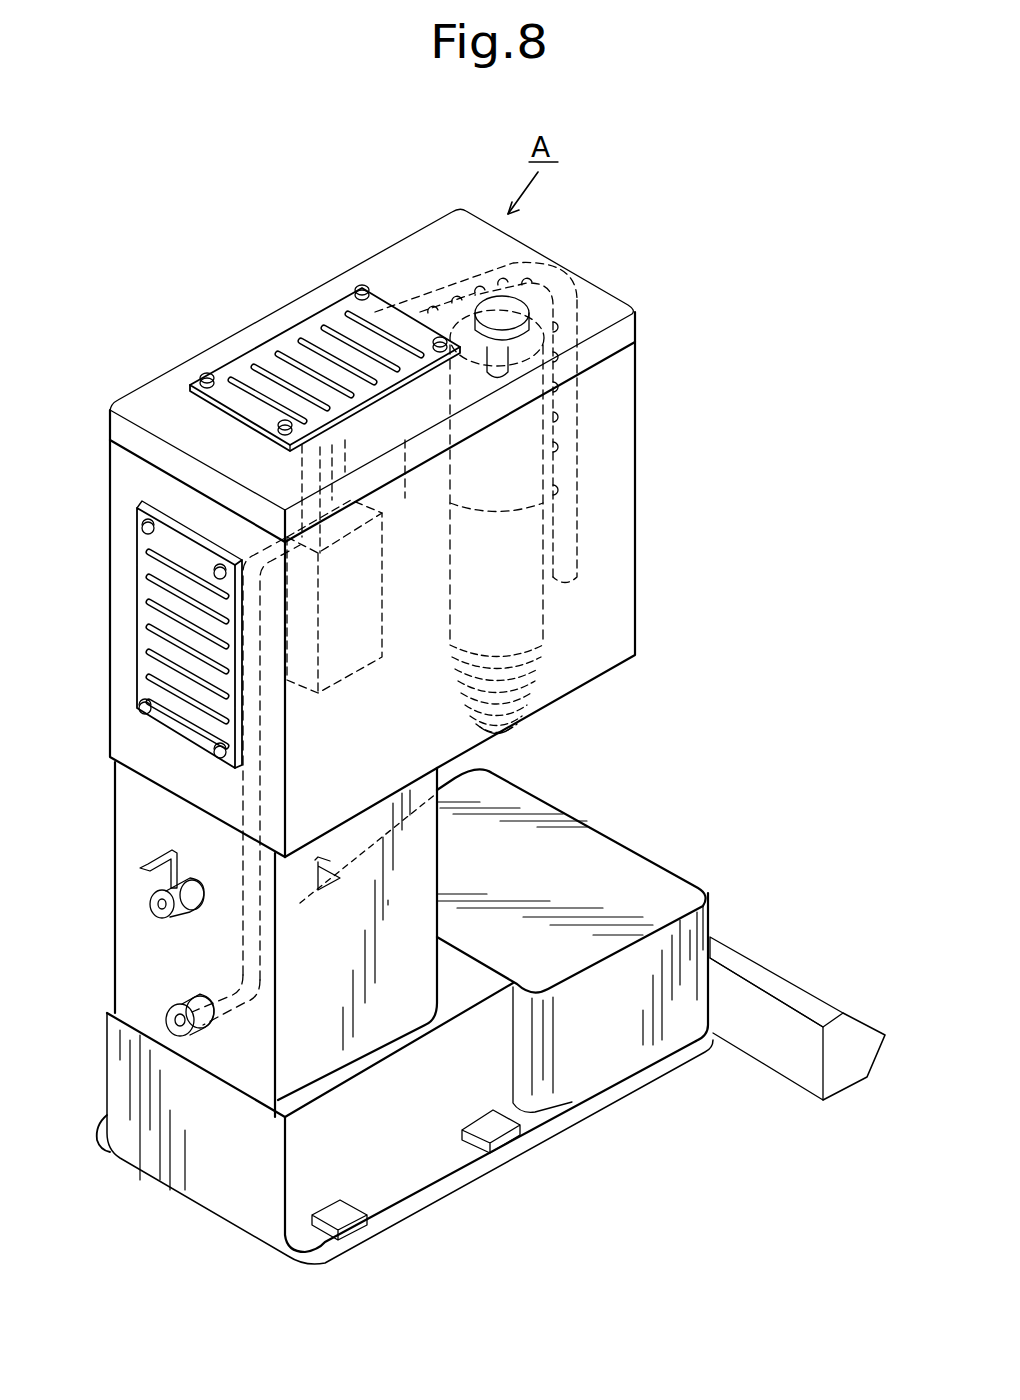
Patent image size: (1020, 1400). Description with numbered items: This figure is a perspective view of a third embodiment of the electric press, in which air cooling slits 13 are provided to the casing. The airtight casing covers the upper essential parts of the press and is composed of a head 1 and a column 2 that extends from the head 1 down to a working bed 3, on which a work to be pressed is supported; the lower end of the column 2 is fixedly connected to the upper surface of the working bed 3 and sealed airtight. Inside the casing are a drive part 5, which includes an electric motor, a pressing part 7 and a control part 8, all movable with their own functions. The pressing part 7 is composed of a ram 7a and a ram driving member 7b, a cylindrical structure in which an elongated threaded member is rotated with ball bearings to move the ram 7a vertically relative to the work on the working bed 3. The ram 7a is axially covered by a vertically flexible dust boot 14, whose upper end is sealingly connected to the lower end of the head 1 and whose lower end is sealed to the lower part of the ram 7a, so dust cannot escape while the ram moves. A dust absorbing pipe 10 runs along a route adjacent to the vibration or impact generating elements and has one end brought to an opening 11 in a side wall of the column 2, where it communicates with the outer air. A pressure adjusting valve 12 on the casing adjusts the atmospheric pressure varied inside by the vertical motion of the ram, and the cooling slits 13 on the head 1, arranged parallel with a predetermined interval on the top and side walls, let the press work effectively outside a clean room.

The head 1 is at (638, 500).
The column 2 is at (418, 875).
The working bed 3 is at (622, 858).
The drive part 5 is at (400, 495).
The pressing part 7 is at (453, 593).
The ram 7a is at (500, 730).
The ram driving member 7b is at (522, 602).
The control part 8 is at (335, 660).
The dust absorbing pipe 10 is at (260, 791).
The opening 11 is at (176, 1004).
The pressure adjusting valve 12 is at (150, 905).
The cooling slits 13 is at (293, 328).
The dust boot 14 is at (545, 665).